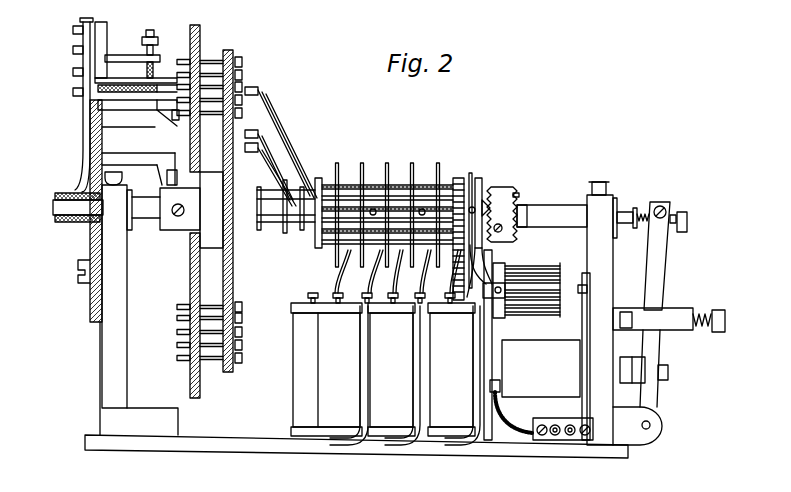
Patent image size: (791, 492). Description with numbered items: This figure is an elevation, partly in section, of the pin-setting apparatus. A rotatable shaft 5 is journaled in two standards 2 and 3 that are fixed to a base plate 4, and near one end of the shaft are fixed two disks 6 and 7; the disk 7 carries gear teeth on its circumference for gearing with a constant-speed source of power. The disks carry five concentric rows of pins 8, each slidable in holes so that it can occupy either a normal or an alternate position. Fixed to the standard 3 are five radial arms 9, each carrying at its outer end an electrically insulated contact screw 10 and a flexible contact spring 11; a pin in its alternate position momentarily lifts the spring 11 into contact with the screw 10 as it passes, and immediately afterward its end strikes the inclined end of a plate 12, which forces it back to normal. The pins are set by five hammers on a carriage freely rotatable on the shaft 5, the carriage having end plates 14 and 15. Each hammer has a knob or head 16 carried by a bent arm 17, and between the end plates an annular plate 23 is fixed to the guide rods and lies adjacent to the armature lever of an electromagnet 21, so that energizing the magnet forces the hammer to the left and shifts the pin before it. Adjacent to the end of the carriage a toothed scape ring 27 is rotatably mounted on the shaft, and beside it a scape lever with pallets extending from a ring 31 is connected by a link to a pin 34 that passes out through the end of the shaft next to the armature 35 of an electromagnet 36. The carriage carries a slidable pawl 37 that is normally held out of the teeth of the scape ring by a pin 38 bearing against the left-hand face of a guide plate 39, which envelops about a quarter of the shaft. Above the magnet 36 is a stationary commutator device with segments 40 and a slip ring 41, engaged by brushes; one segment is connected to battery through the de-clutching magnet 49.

The standard 2 is at (611, 196).
The standard 3 is at (100, 343).
The base plate 4 is at (258, 452).
The rotatable shaft 5 is at (562, 205).
The disk 6 is at (232, 52).
The disk 7 is at (200, 27).
The pins 8 is at (241, 60).
The radial arms 9 is at (82, 145).
The contact screw 10 is at (150, 37).
The flexible contact spring 11 is at (163, 78).
The plate 12 is at (172, 117).
The end plate 14 is at (320, 178).
The end plate 15 is at (457, 180).
The knob or head 16 is at (256, 87).
The bent arm 17 is at (276, 134).
The electromagnet 21 is at (295, 385).
The annular plate 23 is at (388, 167).
The scape ring 27 is at (509, 186).
The ring 31 is at (521, 198).
The pin 34 is at (634, 208).
The armature 35 is at (672, 248).
The electromagnet 36 is at (537, 343).
The slidable pawl 37 is at (470, 200).
The pin 38 is at (483, 203).
The guide plate 39 is at (478, 182).
The segments 40 is at (560, 312).
The slip ring 41 is at (499, 316).
The de-clutching magnet 49 is at (452, 437).